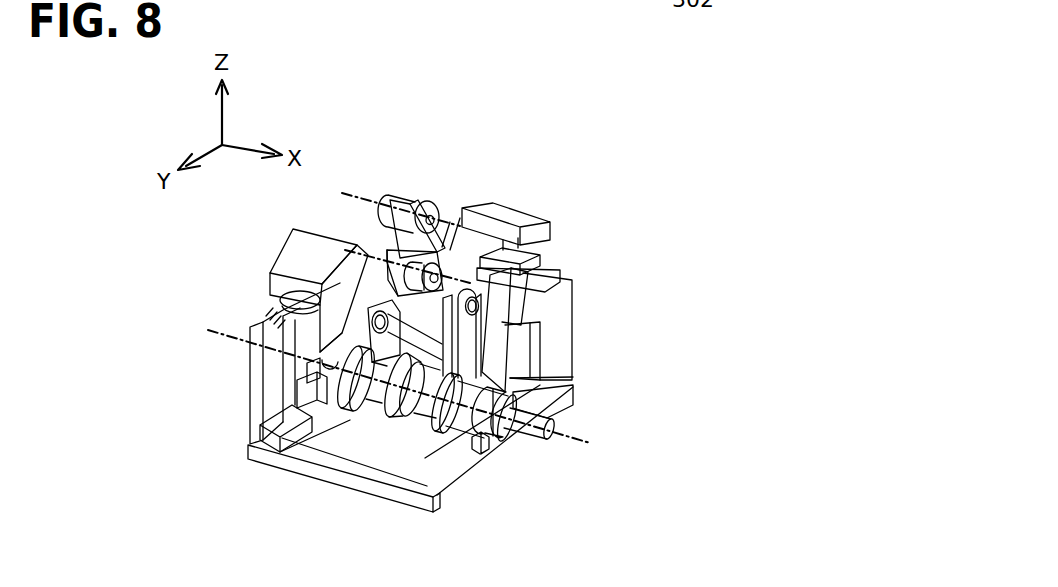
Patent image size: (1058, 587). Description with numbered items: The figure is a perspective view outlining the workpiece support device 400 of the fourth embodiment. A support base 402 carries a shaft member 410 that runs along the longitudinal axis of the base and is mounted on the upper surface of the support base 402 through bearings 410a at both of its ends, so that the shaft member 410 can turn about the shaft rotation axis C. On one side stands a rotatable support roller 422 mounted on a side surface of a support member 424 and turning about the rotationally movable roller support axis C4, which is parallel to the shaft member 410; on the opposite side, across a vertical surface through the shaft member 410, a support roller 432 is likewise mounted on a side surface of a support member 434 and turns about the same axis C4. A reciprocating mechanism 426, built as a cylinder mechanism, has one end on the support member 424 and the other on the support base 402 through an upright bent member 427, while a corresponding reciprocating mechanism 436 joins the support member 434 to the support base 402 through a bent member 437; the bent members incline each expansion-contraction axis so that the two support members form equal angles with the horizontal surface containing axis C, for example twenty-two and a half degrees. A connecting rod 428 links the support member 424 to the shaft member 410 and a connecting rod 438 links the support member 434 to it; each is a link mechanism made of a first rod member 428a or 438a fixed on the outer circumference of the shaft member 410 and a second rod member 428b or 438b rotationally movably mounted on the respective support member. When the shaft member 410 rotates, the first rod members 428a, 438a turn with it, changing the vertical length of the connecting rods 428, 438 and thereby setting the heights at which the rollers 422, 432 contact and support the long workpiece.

The workpiece support device 400 is at (599, 204).
The support base 402 is at (328, 472).
The shaft member 410 is at (528, 432).
The bearings 410a is at (495, 440).
The rotatable support roller 422 is at (417, 205).
The support member (fourth support member) 424 is at (373, 250).
The reciprocating mechanism (fourth reciprocating mechanism) 426 is at (322, 336).
The bent member 427 is at (256, 386).
The connecting rod (fourth connecting rod) 428 is at (375, 318).
The first rod member 428a is at (353, 372).
The second rod member 428b is at (390, 340).
The support roller 432 is at (390, 252).
The support member (fifth support member) 434 is at (450, 269).
The reciprocating mechanism (fifth reciprocating mechanism) 436 is at (483, 368).
The bent member 437 is at (553, 307).
The connecting rod (fifth connecting rod) 438 is at (455, 427).
The first rod member 438a is at (420, 417).
The second rod member 438b is at (468, 337).
The shaft rotation axis C is at (570, 430).
The rotationally movable roller support axis C4 is at (470, 278).